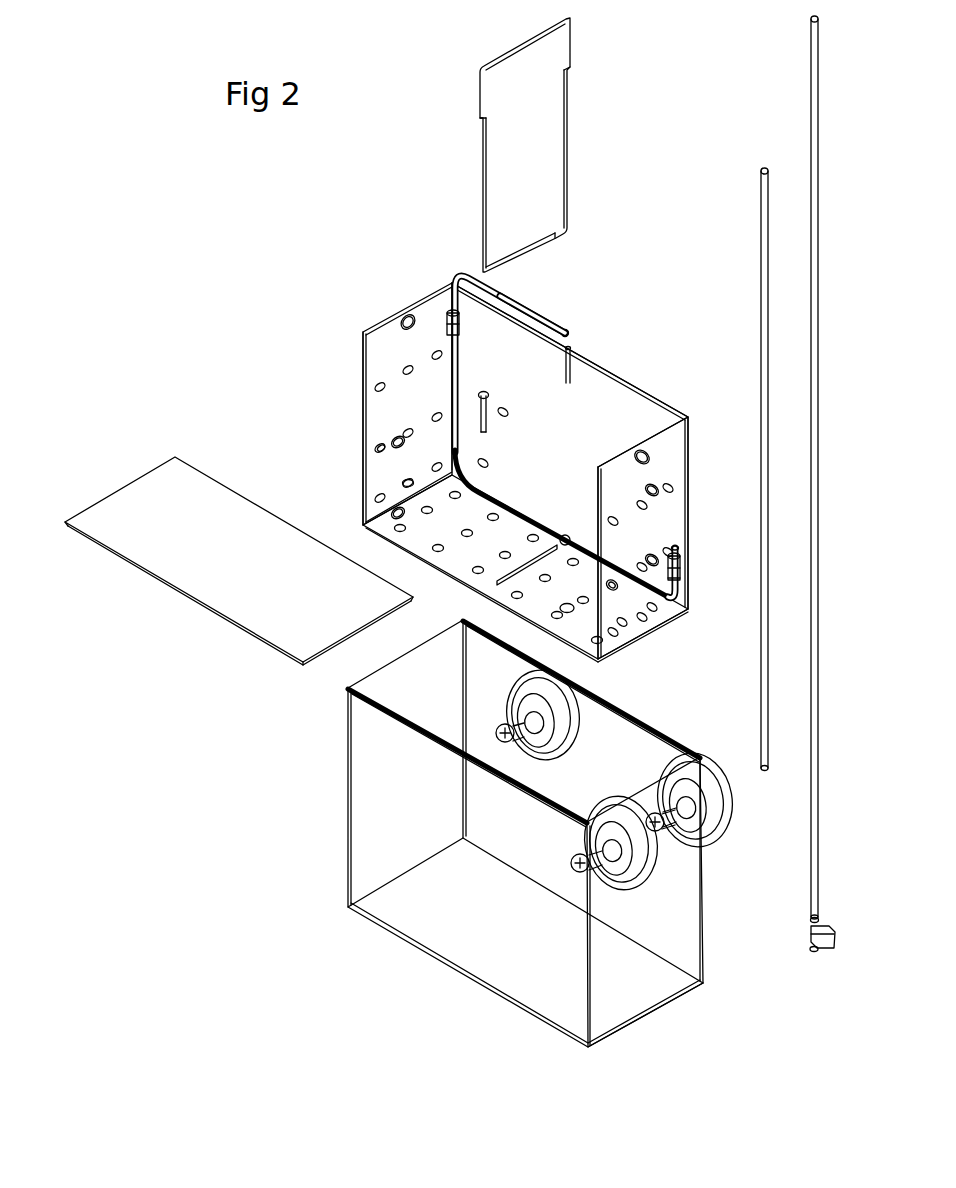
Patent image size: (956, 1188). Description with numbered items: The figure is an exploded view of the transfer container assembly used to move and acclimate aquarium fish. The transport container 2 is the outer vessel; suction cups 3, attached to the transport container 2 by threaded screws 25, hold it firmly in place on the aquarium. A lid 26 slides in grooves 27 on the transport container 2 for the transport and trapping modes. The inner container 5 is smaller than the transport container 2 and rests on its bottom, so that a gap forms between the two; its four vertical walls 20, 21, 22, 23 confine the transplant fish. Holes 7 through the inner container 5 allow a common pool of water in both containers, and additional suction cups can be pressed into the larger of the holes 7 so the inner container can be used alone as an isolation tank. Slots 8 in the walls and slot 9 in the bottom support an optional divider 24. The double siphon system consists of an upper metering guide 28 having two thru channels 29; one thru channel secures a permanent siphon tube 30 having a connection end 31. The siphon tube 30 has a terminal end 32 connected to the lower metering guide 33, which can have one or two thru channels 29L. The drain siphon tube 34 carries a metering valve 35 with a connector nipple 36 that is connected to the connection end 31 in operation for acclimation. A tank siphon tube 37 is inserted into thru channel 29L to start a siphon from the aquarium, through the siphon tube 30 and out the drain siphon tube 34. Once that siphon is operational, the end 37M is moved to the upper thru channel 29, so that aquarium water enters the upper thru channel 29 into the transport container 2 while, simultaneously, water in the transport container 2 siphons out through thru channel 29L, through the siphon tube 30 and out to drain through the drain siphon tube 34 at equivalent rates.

The transport container 2 is at (660, 1013).
The suction cups 3 is at (572, 700).
The inner container 5 is at (620, 205).
The holes 7 is at (375, 448).
The slots 8 is at (478, 413).
The slot 9 is at (496, 583).
The vertical wall 20 is at (390, 330).
The vertical wall 21 is at (506, 440).
The vertical wall 22 is at (599, 392).
The vertical wall 23 is at (670, 452).
The divider 24 is at (540, 162).
The threaded screws 25 is at (657, 813).
The lid 26 is at (233, 560).
The grooves 27 is at (494, 638).
The upper metering guide 28 is at (450, 316).
The thru channels 29 is at (461, 315).
The thru channel 29L is at (678, 550).
The siphon tube 30 is at (522, 518).
The connection end 31 is at (568, 333).
The terminal end 32 is at (684, 578).
The lower metering guide 33 is at (684, 566).
The drain siphon tube 34 is at (818, 718).
The metering valve 35 is at (832, 928).
The connector nipple 36 is at (815, 948).
The tank siphon tube 37 is at (762, 228).
The end 37M is at (766, 772).